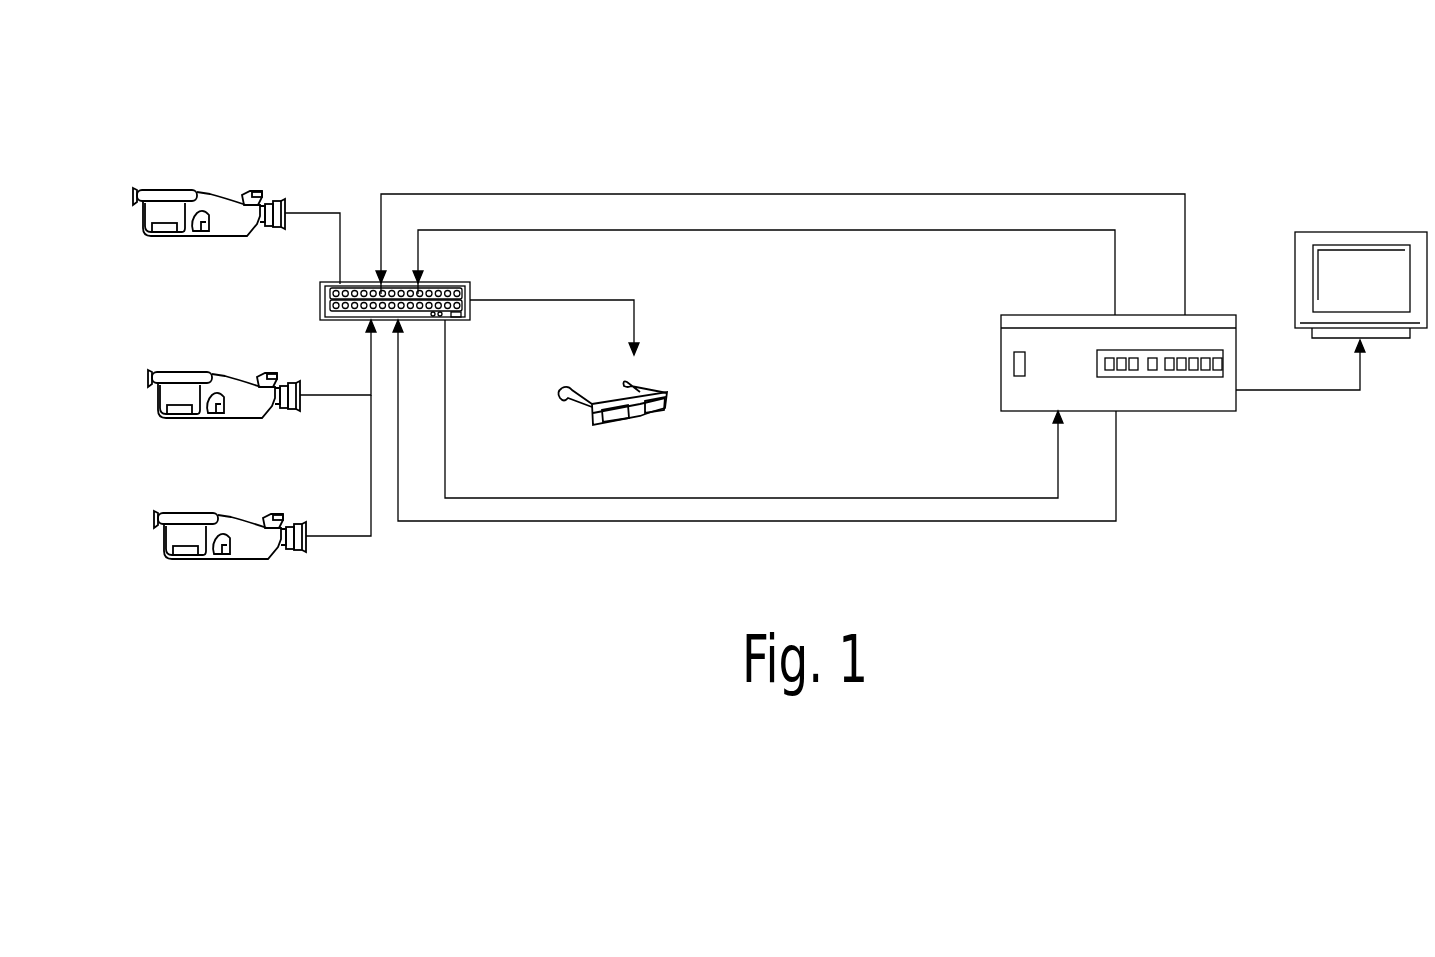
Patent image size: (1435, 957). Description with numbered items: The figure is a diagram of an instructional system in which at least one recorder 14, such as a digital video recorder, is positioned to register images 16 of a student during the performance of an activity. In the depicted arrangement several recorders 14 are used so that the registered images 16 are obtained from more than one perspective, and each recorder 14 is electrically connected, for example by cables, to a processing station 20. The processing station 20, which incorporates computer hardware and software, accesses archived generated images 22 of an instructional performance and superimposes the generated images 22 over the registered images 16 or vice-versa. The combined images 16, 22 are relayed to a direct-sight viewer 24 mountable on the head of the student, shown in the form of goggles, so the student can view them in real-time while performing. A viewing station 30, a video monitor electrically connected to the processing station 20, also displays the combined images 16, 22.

The recorder 14 is at (178, 190).
The registered images 16 is at (316, 212).
The processing station 20 is at (465, 321).
The generated images 22 is at (563, 300).
The direct-sight viewer 24 is at (668, 393).
The viewing station 30 is at (1370, 232).